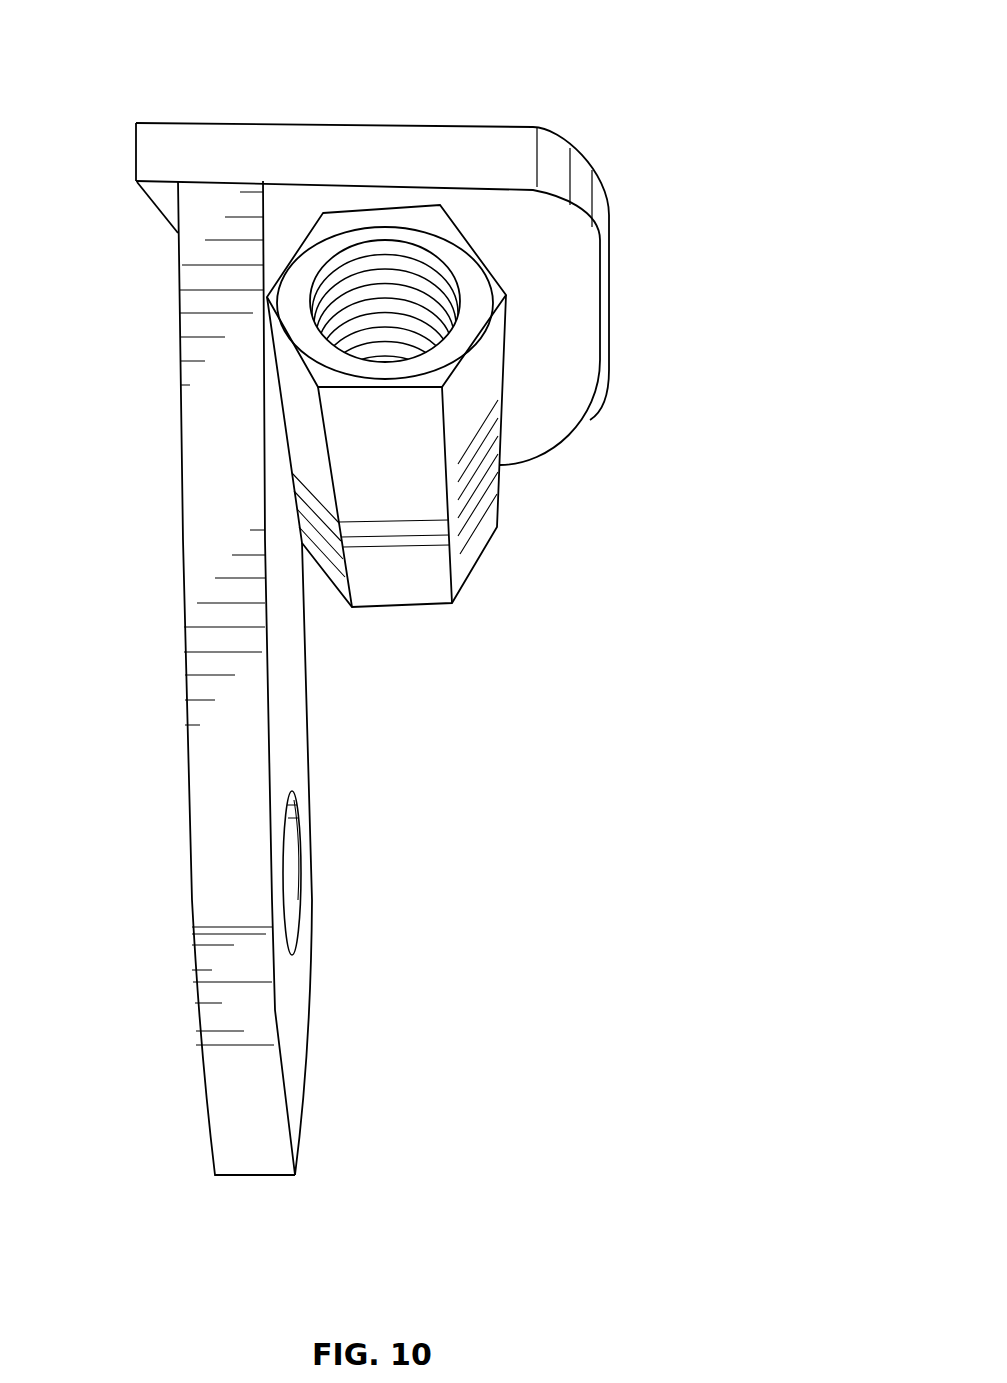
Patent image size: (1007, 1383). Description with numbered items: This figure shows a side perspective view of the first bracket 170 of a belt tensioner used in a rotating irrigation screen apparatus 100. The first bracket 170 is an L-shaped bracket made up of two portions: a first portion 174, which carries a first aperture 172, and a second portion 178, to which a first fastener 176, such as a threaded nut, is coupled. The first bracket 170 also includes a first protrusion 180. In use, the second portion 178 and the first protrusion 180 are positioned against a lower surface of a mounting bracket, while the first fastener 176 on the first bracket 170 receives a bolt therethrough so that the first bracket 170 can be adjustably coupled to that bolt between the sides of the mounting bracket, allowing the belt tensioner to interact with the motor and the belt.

The mounting bracket assembly 100 is at (596, 35).
The first bracket 170 is at (222, 778).
The first aperture 172 is at (292, 870).
The first portion 174 is at (193, 945).
The first fastener 176 is at (435, 498).
The second portion 178 is at (483, 162).
The first protrusion 180 is at (158, 187).